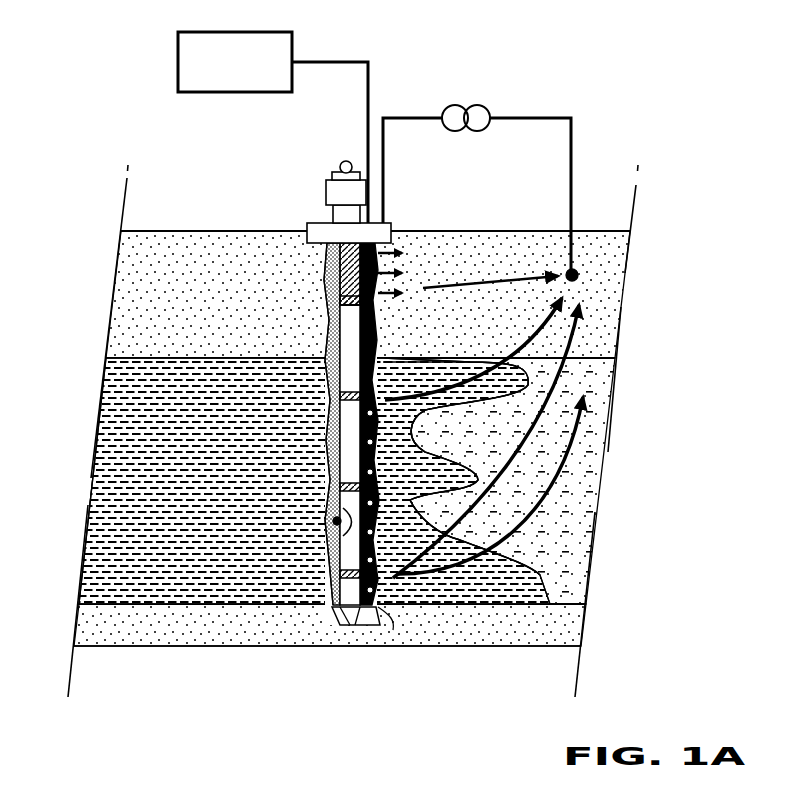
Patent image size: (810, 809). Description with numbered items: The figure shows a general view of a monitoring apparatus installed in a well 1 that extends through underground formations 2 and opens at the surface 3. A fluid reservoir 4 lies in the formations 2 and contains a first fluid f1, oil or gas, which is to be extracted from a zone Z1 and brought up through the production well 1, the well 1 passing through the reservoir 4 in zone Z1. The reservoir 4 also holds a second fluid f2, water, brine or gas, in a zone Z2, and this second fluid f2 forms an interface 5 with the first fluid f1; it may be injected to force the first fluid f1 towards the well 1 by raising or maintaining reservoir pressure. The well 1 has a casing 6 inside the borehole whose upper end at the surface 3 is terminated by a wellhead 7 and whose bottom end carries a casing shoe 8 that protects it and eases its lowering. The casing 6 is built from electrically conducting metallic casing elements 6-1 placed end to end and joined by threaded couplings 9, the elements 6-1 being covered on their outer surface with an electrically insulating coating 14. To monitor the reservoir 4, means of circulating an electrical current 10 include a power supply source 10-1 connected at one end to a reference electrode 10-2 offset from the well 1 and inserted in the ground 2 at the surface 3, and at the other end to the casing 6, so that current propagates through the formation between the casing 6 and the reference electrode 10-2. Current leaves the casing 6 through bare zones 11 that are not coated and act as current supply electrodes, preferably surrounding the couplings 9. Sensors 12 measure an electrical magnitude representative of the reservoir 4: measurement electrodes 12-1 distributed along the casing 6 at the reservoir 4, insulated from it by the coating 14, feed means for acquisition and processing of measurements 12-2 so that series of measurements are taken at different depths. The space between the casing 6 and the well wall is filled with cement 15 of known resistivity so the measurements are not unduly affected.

The well 1 is at (352, 558).
The underground formations 2 is at (600, 337).
The surface 3 is at (615, 231).
The fluid reservoir 4 is at (570, 598).
The interface 5 is at (540, 567).
The casing 6 is at (332, 262).
The casing elements 6-1 is at (332, 276).
The wellhead 7 is at (336, 192).
The casing shoe 8 is at (364, 623).
The threaded couplings 9 is at (343, 396).
The means of circulating an electrical current 10 is at (446, 103).
The power supply source 10-1 is at (495, 104).
The reference electrode 10-2 is at (578, 278).
The bare zones 11 is at (343, 290).
The sensors 12 is at (198, 115).
The measurement electrodes 12-1 is at (385, 382).
The means for acquisition and processing of measurements 12-2 is at (187, 67).
The coating 14 is at (352, 450).
The cement 15 is at (393, 608).
The zone Z1 is at (126, 410).
The zone Z2 is at (596, 462).
The first fluid f1 is at (125, 488).
The second fluid f2 is at (575, 517).